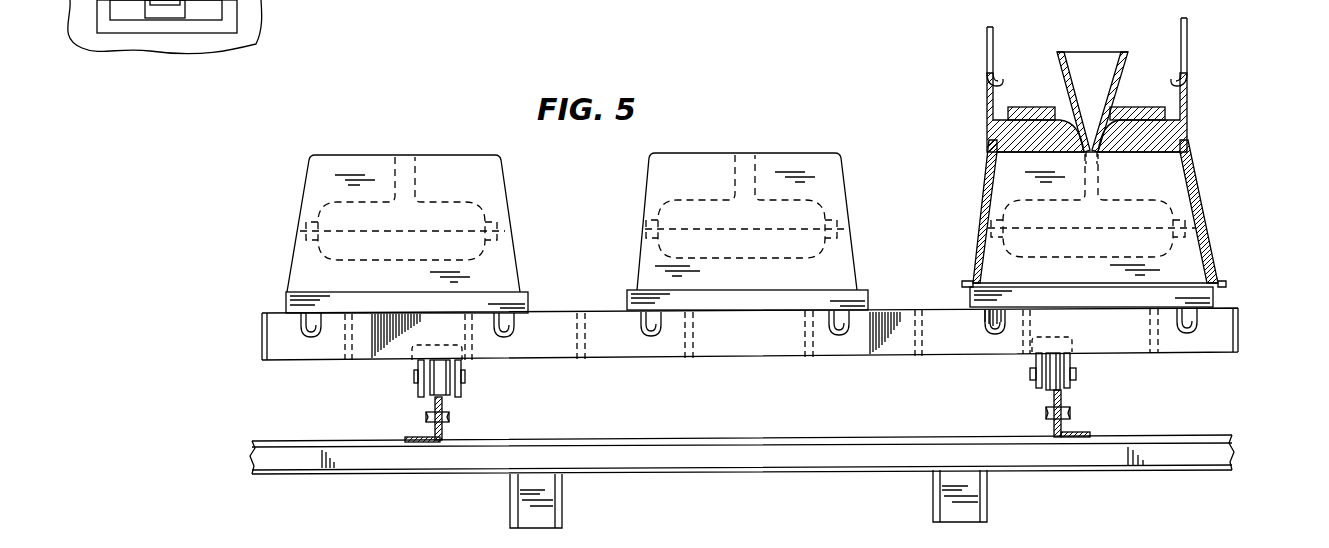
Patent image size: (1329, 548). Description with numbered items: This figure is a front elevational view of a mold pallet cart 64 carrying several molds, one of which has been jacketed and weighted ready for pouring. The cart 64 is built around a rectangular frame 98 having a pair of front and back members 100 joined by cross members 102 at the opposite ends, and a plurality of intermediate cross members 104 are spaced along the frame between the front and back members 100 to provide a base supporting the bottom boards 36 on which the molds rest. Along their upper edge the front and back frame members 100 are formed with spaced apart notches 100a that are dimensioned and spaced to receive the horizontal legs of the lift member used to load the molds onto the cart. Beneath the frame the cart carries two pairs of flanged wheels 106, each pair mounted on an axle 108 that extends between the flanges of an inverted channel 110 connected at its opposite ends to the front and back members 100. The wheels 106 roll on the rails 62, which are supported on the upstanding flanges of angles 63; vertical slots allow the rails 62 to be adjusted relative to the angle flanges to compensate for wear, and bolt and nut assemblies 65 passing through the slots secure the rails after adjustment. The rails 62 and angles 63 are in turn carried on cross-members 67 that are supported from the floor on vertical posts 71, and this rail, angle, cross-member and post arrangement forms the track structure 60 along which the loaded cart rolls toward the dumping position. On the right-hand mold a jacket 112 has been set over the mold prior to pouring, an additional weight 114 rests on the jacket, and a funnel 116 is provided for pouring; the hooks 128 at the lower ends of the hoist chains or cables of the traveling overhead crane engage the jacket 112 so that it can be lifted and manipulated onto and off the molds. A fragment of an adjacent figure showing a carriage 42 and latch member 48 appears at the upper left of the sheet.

The bottom board 36 is at (286, 300).
The carriage 42 is at (278, 5).
The latch member 48 is at (170, 5).
The track assembly 60 is at (736, 507).
The rail 62 is at (443, 405).
The angle 63 is at (407, 437).
The pallet cart 64 is at (1246, 345).
The bolt and nut assembly 65 is at (426, 416).
The cross-member 67 is at (712, 449).
The vertical post 71 is at (562, 496).
The rectangular frame 98 is at (262, 350).
The front and back member 100 is at (792, 330).
The notch 100a is at (311, 337).
The cross member 102 is at (262, 320).
The intermediate cross member 104 is at (352, 345).
The flanged wheel 106 is at (446, 375).
The axle 108 is at (452, 386).
The inverted channel 110 is at (432, 356).
The jacket 112 is at (1183, 131).
The weight 114 is at (1150, 106).
The funnel 116 is at (1122, 52).
The hook 128 is at (987, 78).